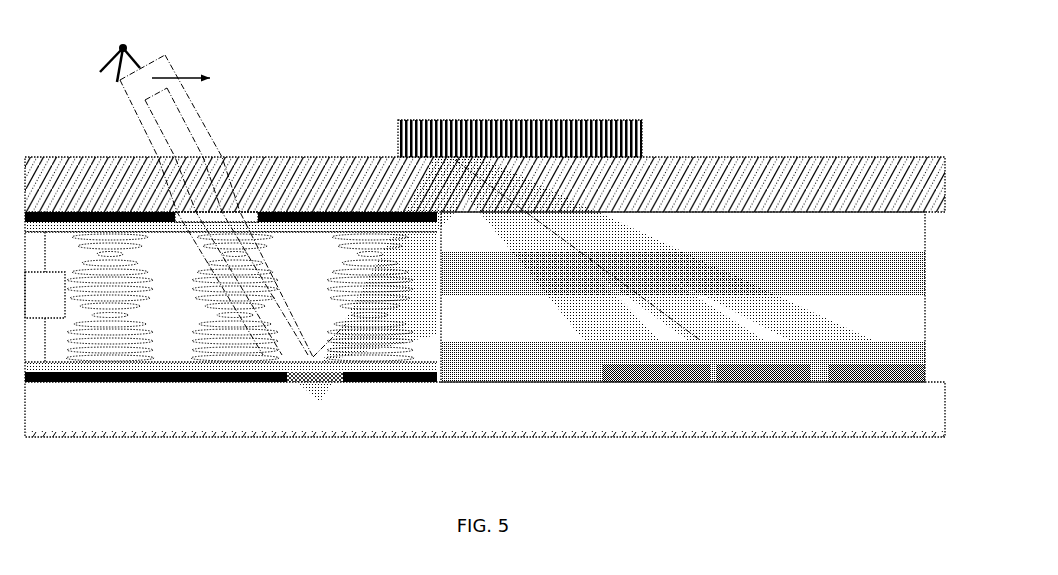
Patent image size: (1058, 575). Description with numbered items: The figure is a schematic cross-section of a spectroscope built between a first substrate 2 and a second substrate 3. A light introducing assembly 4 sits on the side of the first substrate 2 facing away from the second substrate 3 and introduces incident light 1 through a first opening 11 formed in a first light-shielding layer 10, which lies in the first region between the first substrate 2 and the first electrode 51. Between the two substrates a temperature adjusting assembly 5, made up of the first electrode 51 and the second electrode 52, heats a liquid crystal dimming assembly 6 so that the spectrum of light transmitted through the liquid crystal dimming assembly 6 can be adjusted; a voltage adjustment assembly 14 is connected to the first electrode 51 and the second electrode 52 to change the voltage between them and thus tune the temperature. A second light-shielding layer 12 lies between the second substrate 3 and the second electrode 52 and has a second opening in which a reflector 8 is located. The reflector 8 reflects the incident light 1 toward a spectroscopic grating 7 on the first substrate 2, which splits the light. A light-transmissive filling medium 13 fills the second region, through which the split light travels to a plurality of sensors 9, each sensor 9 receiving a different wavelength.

The incident light 1 is at (132, 46).
The first substrate 2 is at (230, 173).
The second substrate 3 is at (445, 403).
The light introducing assembly 4 is at (189, 81).
The temperature adjusting assembly 5 is at (332, 365).
The first electrode 51 is at (252, 233).
The second electrode 52 is at (378, 380).
The liquid crystal dimming assembly 6 is at (110, 327).
The spectroscopic grating 7 is at (485, 120).
The reflector 8 is at (313, 378).
The sensors 9 is at (877, 370).
The first light-shielding layer 10 is at (345, 215).
The first opening 11 is at (193, 220).
The second light-shielding layer 12 is at (263, 380).
The light-transmissive filling medium 13 is at (687, 250).
The voltage adjustment assembly 14 is at (45, 297).